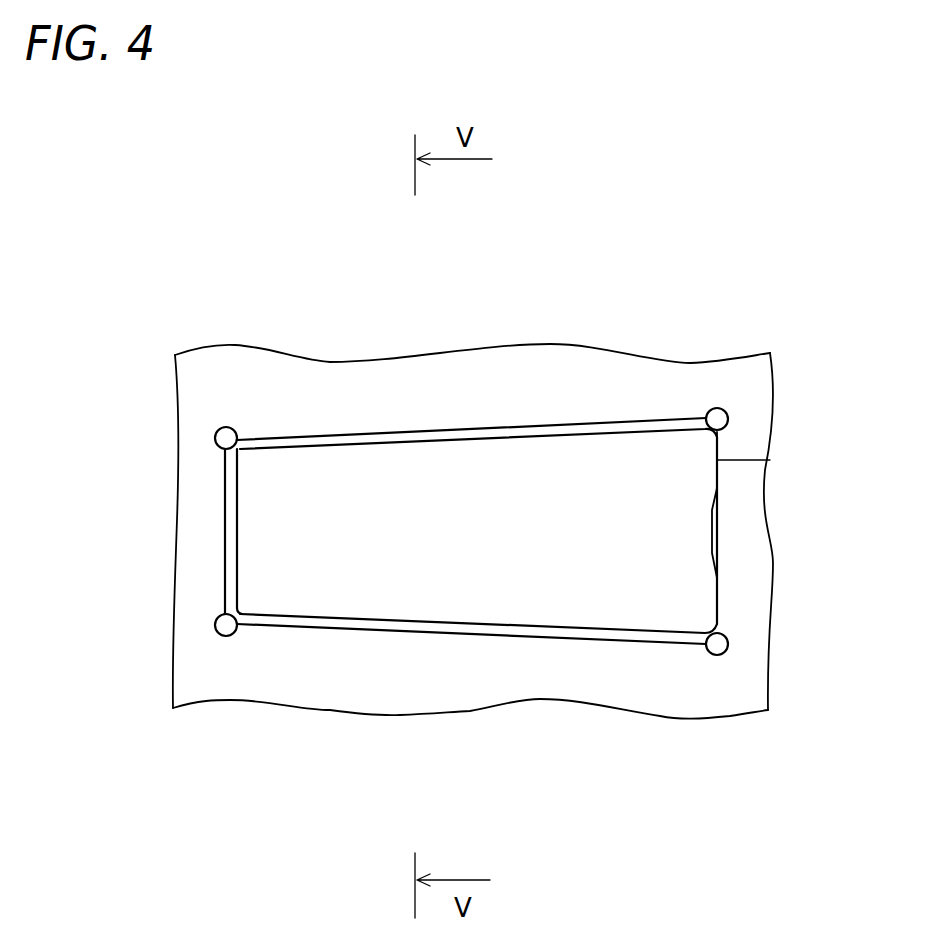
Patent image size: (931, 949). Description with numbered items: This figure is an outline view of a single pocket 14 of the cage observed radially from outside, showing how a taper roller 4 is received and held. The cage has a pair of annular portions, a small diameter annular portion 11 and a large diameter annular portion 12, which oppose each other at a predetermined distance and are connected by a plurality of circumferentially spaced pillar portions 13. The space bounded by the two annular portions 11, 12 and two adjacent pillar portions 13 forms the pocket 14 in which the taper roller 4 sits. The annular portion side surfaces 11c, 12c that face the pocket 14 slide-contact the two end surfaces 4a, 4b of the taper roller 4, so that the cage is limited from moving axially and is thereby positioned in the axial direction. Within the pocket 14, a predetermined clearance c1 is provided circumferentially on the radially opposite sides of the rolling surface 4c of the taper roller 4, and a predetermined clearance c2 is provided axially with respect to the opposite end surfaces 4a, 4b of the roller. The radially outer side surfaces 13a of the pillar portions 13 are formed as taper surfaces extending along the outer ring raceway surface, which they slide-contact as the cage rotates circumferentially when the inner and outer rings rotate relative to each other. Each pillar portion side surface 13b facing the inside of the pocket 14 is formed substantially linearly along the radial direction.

The taper roller 4 is at (616, 610).
The end surface of taper roller 4a is at (237, 566).
The end surface of taper roller 4b is at (770, 459).
The rolling surface of taper roller 4c is at (605, 430).
The small diameter annular portion 11 is at (182, 538).
The annular portion side surface 11c is at (238, 592).
The large diameter annular portion 12 is at (762, 537).
The annular portion side surface 12c is at (717, 595).
The pillar portion 13 is at (533, 356).
The radially outer side surface of pillar portion 13a is at (305, 381).
The pillar portion side surface 13b is at (372, 445).
The pocket 14 is at (367, 611).
The clearance c1 is at (102, 461).
The clearance c2 is at (249, 274).